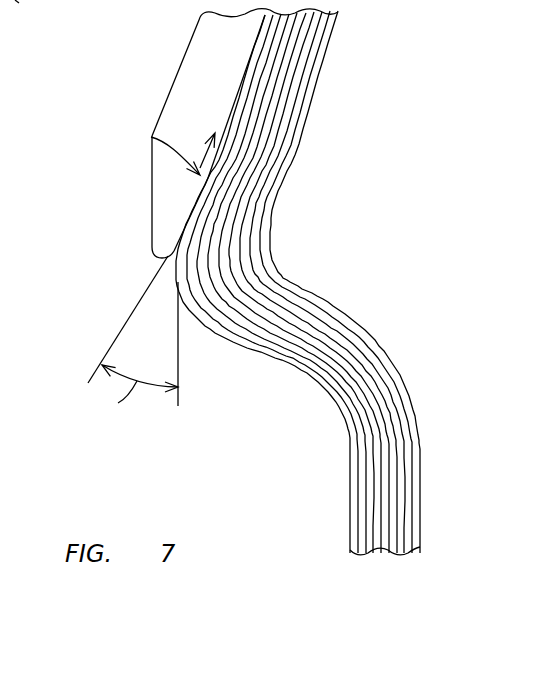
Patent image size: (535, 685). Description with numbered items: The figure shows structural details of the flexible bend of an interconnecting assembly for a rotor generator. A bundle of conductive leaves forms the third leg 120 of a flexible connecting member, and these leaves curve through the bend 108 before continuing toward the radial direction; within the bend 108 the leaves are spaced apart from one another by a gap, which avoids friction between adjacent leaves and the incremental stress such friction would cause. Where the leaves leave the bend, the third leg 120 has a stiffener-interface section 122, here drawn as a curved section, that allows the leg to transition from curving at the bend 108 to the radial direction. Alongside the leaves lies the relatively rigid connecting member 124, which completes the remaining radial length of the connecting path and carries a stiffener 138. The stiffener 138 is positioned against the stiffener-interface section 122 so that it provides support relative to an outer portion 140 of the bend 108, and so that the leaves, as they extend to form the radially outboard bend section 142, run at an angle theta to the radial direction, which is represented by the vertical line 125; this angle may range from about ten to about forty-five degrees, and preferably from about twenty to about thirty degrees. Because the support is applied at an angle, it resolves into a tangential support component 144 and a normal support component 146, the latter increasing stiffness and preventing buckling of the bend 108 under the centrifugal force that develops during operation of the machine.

The bend 108 is at (298, 254).
The third leg 120 is at (330, 55).
The stiffener-interface section 122 is at (247, 80).
The connecting member 124 is at (190, 40).
The vertical line 125 is at (178, 356).
The stiffener 138 is at (152, 212).
The outer portion of bend 140 is at (192, 194).
The bend section 142 is at (320, 159).
The tangential support component 144 is at (203, 150).
The normal support component 146 is at (151, 137).